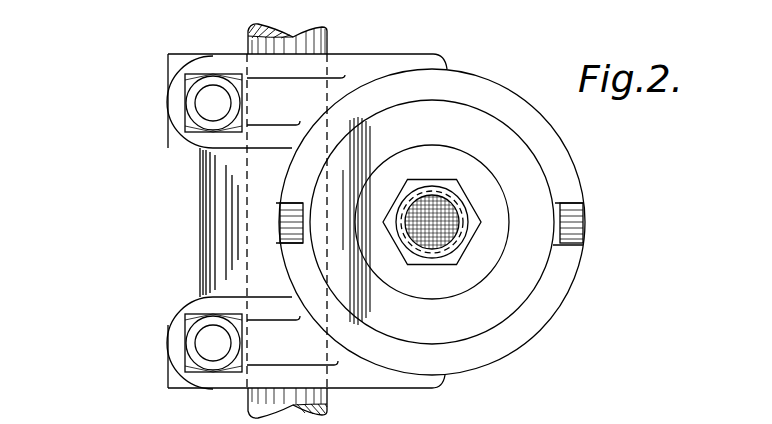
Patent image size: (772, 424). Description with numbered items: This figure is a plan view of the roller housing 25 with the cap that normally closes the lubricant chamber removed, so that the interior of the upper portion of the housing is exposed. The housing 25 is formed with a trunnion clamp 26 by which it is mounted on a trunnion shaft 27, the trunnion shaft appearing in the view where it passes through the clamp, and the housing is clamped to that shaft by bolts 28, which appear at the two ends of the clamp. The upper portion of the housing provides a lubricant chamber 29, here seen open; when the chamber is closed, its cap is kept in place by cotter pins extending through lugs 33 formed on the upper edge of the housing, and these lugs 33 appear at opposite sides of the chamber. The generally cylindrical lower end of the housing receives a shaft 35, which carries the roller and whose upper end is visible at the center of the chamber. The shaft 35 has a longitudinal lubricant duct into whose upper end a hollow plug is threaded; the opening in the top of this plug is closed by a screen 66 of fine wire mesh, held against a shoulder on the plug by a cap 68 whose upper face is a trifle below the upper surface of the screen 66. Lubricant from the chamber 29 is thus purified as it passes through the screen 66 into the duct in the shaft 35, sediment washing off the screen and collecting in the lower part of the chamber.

The housing 25 is at (538, 138).
The trunnion clamp 26 is at (212, 240).
The trunnion shaft 27 is at (308, 46).
The bolts 28 is at (205, 102).
The lubricant chamber 29 is at (523, 213).
The lugs 33 is at (293, 213).
The shaft 35 is at (487, 232).
The screen 66 is at (457, 212).
The cap 68 is at (435, 193).